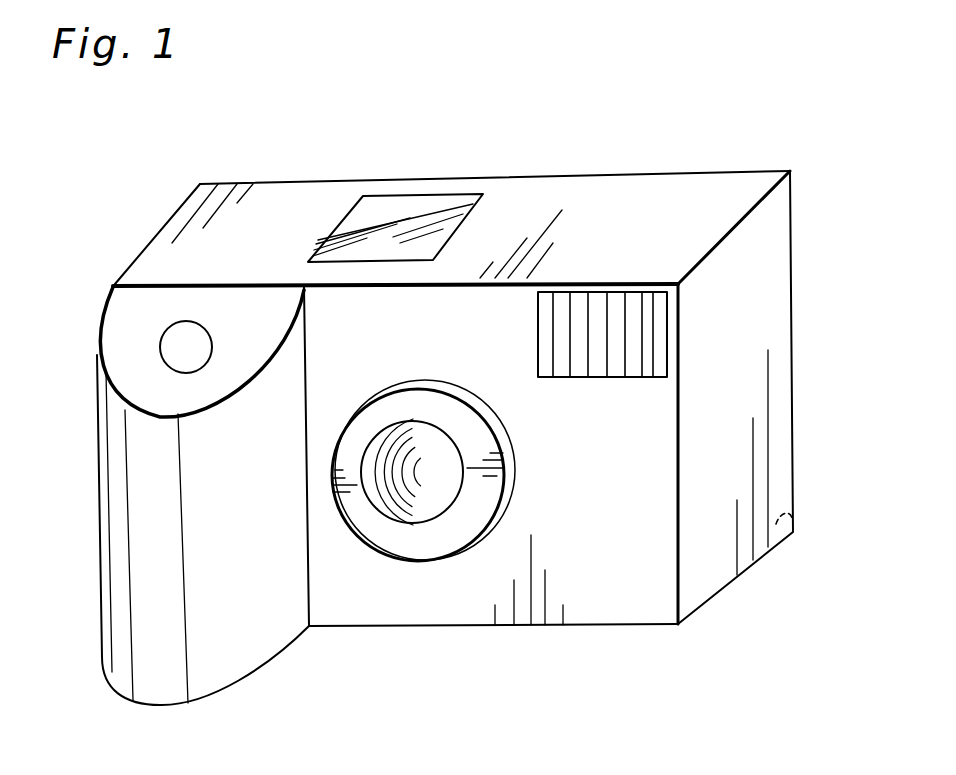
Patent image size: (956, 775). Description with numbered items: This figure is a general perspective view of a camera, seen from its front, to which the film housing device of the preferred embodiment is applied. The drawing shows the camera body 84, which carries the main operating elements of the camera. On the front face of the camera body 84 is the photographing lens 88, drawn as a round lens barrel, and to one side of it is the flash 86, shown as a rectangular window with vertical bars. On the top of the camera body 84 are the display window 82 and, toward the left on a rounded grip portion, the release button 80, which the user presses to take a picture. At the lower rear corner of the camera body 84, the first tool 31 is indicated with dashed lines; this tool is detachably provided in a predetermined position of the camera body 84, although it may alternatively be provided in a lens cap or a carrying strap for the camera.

The release button 80 is at (173, 352).
The display window 82 is at (398, 203).
The camera body 84 is at (678, 193).
The flash 86 is at (638, 335).
The photographing lens 88 is at (415, 508).
The first tool 31 is at (793, 533).